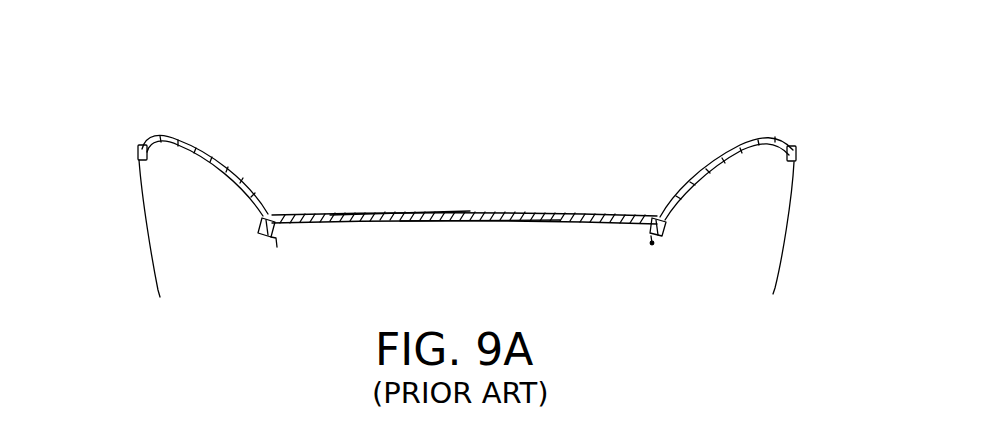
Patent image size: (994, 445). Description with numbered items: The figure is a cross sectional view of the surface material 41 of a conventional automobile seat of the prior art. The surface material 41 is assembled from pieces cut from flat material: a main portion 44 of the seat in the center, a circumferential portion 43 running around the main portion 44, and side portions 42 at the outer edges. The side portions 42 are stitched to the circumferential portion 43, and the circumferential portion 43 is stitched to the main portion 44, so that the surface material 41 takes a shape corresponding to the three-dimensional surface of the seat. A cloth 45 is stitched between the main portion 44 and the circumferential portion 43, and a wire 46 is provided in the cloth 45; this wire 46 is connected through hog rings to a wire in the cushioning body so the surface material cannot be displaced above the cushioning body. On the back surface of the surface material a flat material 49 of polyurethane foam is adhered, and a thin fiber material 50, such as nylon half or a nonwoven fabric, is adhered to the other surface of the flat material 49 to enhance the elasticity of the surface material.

The surface material 41 is at (633, 152).
The side portions 42 is at (142, 208).
The circumferential portion 43 is at (215, 152).
The main portion 44 is at (487, 212).
The cloth 45 is at (280, 238).
The wire 46 is at (277, 238).
The flat material 49 is at (400, 213).
The thin fiber material 50 is at (433, 223).